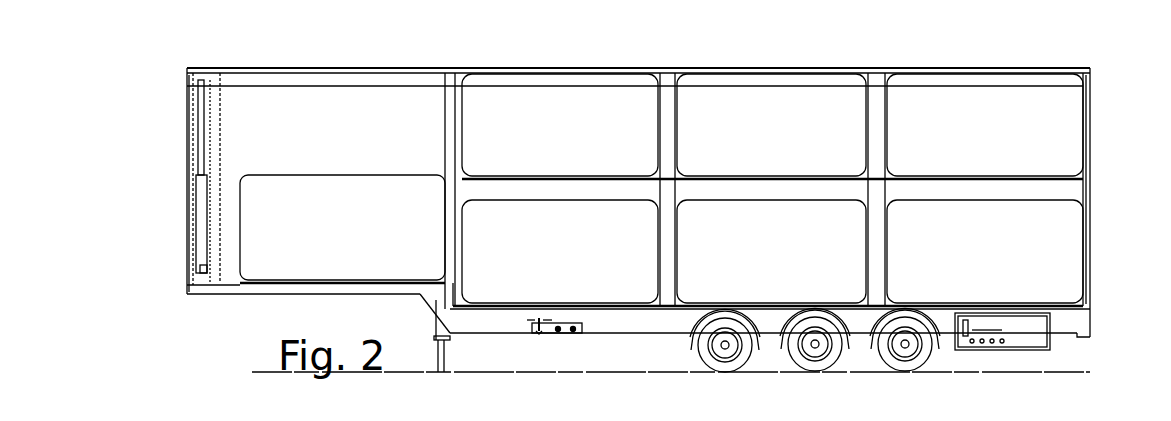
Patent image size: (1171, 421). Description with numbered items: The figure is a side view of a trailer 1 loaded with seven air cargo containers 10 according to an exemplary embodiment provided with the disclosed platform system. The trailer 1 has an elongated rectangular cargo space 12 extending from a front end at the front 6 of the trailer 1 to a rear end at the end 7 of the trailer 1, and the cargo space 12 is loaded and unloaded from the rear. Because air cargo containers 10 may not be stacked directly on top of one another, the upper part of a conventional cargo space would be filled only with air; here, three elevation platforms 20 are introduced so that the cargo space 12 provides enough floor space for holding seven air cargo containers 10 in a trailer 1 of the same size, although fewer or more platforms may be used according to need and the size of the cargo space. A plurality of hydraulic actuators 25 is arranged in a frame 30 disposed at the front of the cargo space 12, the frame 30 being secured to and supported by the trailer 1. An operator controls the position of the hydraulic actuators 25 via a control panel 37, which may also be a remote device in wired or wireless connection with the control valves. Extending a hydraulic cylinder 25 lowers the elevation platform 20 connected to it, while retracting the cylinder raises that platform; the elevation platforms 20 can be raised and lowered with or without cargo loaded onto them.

The trailer 1 is at (205, 34).
The front 6 is at (187, 153).
The end 7 is at (1085, 190).
The air cargo containers/pallets 10 is at (313, 240).
The cargo space 12 is at (717, 192).
The elevation platforms 20 is at (615, 178).
The hydraulic actuators 25 is at (200, 226).
The frame 30 is at (215, 274).
The control panel 37 is at (972, 320).